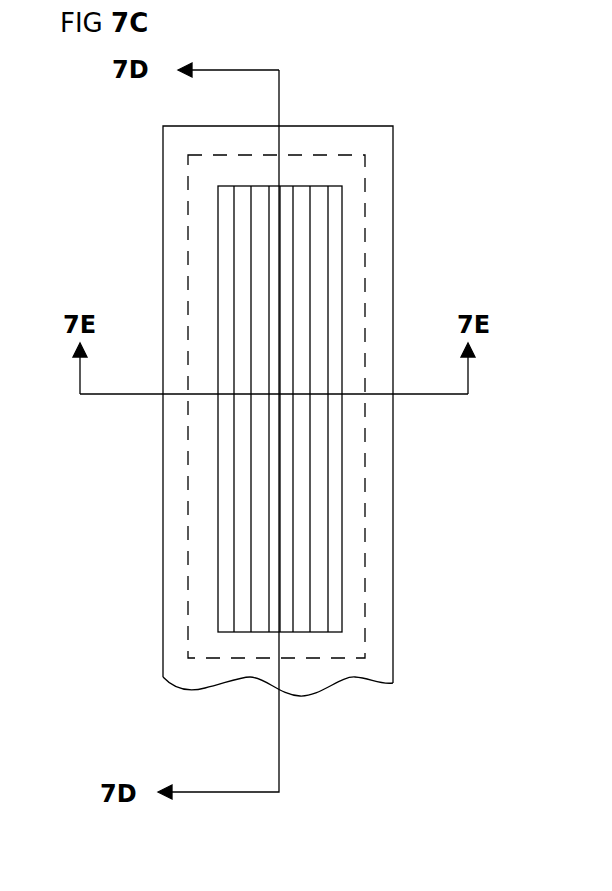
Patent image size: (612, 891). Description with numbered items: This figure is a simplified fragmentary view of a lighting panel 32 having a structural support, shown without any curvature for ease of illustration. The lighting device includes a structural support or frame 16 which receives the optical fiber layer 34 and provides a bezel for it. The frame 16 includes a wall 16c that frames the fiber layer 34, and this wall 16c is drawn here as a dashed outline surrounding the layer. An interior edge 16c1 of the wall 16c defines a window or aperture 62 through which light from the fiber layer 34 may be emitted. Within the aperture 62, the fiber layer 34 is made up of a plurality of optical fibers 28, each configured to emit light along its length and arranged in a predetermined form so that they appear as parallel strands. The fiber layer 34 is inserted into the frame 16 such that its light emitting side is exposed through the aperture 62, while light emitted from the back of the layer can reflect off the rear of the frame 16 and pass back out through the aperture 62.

The structural support or frame 16 is at (393, 147).
The wall 16c is at (203, 563).
The interior edge 16c1 is at (219, 283).
The optical fibers 28 is at (233, 460).
The lighting panel 32 is at (352, 100).
The optical fiber layer 34 is at (255, 488).
The aperture 62 is at (323, 290).